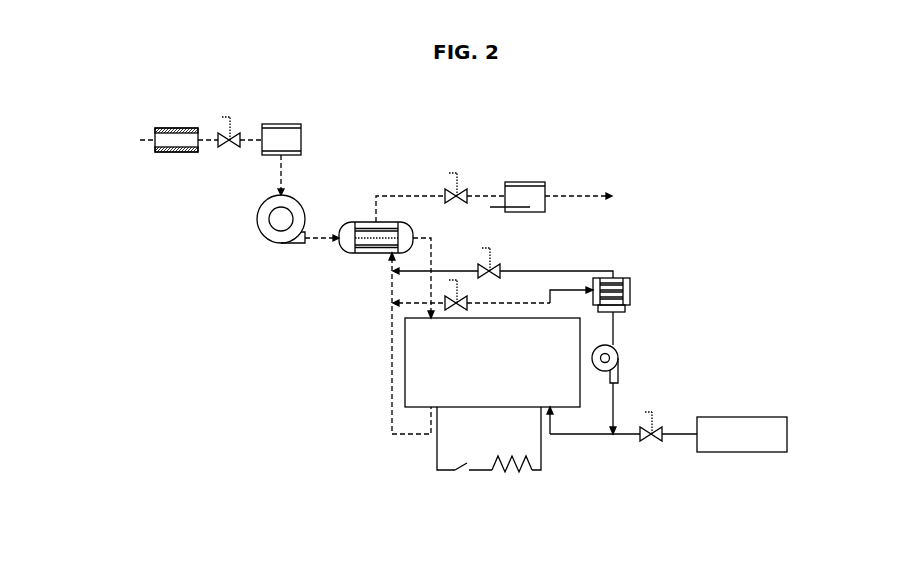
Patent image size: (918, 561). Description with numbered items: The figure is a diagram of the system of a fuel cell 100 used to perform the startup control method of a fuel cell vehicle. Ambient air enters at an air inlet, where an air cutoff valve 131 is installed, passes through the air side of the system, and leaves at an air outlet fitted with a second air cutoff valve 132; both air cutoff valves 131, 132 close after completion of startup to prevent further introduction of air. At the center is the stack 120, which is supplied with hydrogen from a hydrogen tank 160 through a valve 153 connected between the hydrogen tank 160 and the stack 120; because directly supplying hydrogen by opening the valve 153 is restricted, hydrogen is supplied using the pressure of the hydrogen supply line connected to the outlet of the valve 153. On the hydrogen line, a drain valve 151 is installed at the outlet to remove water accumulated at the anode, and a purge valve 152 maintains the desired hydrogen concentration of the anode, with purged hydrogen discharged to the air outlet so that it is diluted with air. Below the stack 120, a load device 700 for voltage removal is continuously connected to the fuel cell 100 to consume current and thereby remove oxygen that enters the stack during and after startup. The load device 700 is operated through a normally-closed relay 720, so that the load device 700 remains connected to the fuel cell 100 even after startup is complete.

The fuel cell 100 is at (308, 347).
The stack 120 is at (405, 368).
The air cutoff valve 131 is at (230, 143).
The air cutoff valve 132 is at (458, 176).
The drain valve 151 is at (492, 252).
The purge valve 152 is at (460, 283).
The valve 153 is at (648, 445).
The hydrogen tank 160 is at (728, 452).
The load device 700 is at (508, 472).
The normally-closed relay 720 is at (462, 471).